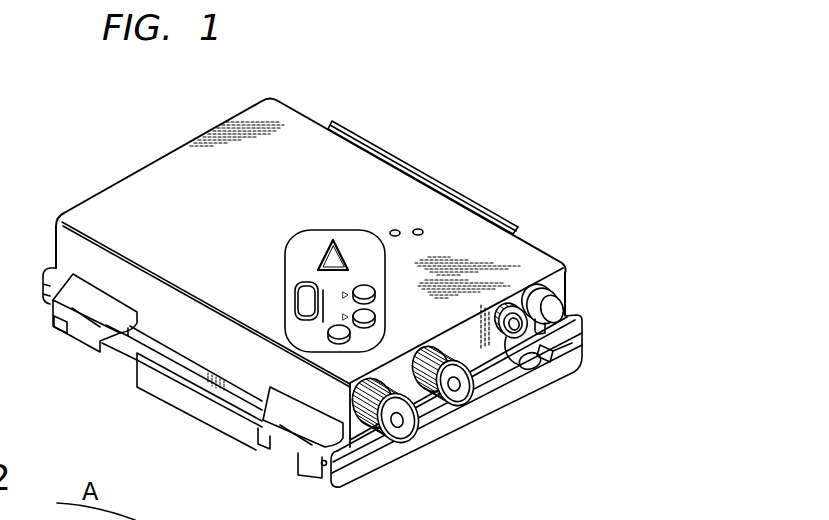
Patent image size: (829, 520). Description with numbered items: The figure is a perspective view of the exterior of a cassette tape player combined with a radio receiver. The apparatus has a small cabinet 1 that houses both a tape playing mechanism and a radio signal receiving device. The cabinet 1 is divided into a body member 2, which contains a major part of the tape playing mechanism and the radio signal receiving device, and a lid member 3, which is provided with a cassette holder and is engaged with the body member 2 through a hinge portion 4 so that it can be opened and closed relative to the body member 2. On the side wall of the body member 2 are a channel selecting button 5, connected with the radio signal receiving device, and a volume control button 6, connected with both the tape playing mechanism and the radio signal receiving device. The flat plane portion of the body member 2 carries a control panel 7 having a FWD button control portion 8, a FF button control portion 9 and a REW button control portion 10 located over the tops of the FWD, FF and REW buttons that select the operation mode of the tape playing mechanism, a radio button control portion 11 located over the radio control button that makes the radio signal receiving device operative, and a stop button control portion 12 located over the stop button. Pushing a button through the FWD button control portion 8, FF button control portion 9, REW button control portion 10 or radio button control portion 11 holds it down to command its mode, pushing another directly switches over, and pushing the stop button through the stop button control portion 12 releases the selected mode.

The cabinet 1 is at (213, 127).
The body member 2 is at (202, 330).
The lid member 3 is at (370, 482).
The hinge portion 4 is at (57, 327).
The channel selecting button 5 is at (465, 395).
The volume control button 6 is at (407, 438).
The control panel 7 is at (301, 248).
The FWD button control portion 8 is at (335, 247).
The FF button control portion 9 is at (374, 289).
The REW button control portion 10 is at (376, 317).
The radio button control portion 11 is at (352, 328).
The stop button control portion 12 is at (296, 304).